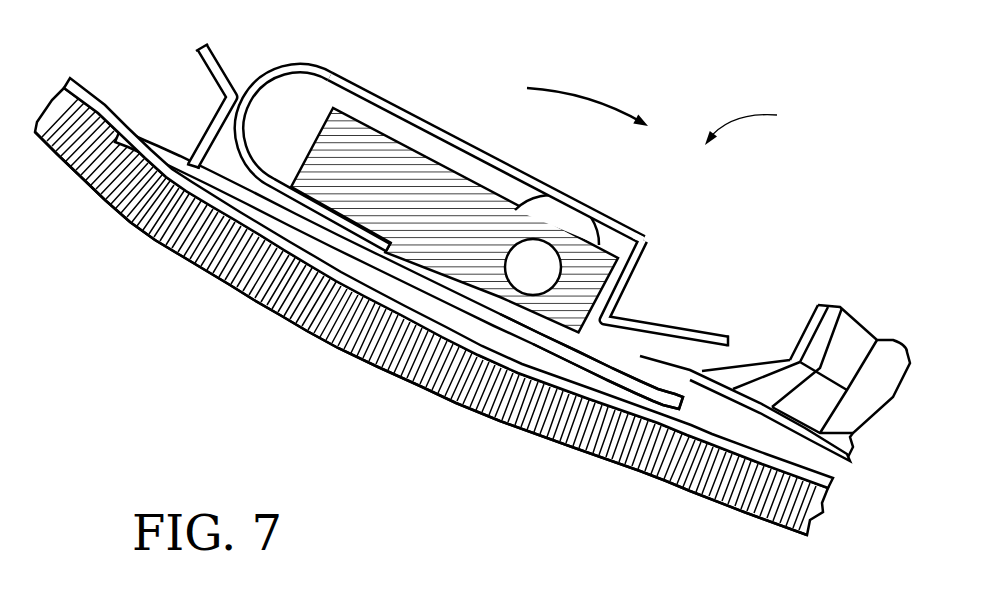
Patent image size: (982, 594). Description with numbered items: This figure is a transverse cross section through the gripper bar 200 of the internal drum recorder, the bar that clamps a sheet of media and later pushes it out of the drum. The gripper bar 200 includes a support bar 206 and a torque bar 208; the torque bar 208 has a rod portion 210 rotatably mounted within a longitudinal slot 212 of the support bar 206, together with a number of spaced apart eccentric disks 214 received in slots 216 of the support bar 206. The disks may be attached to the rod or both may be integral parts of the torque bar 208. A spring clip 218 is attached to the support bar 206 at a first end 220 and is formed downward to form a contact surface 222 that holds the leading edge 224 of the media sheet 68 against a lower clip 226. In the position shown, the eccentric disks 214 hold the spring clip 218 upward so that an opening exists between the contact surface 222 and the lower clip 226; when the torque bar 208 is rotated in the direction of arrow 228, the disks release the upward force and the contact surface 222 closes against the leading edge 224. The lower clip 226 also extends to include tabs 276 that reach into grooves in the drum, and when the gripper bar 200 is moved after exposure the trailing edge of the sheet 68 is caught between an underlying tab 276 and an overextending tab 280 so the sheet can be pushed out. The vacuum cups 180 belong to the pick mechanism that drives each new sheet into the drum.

The media sheet 68 is at (773, 430).
The vacuum cups 180 is at (808, 320).
The gripper bar 200 is at (769, 121).
The support bar 206 is at (422, 112).
The torque bar 208 is at (322, 135).
The rod portion 210 is at (510, 320).
The longitudinal slot 212 is at (533, 214).
The eccentric disks 214 is at (597, 223).
The slots 216 is at (327, 358).
The spring clip 218 is at (330, 68).
The first end 220 is at (298, 222).
The contact surface 222 is at (600, 363).
The leading edge 224 is at (647, 363).
The lower clip 226 is at (617, 363).
The arrow 228 is at (578, 92).
The tabs 276 is at (112, 192).
The overextending tab 280 is at (200, 68).